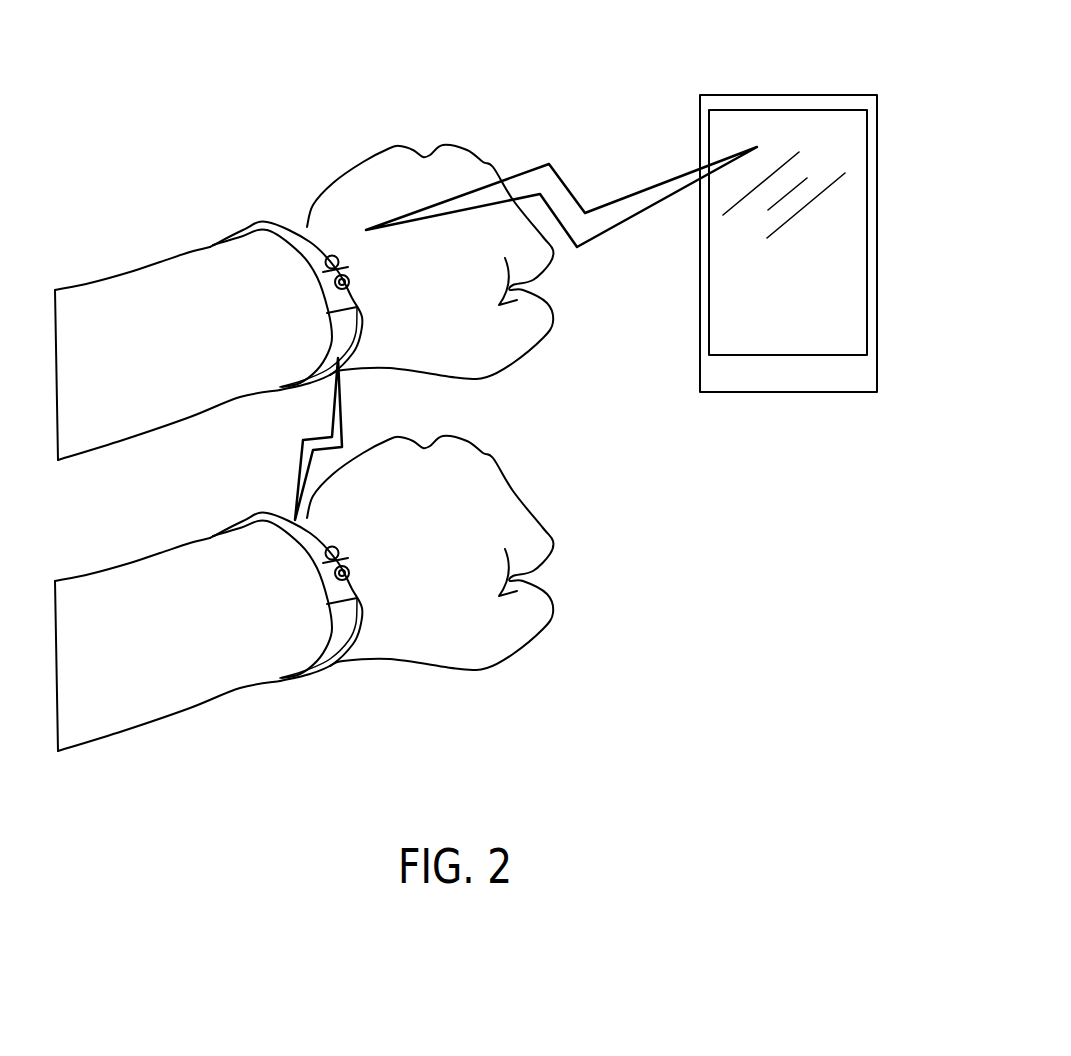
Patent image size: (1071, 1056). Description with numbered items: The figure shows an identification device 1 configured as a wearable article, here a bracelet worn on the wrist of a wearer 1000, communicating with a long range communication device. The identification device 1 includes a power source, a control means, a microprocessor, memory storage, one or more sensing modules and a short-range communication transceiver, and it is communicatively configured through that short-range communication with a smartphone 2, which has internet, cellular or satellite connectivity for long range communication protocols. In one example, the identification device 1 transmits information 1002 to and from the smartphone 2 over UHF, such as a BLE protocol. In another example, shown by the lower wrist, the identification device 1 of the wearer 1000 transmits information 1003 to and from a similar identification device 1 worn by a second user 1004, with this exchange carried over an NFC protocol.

The identification device 1 is at (242, 208).
The smartphone 2 is at (780, 66).
The wearer 1000 is at (400, 93).
The information 1002 is at (640, 173).
The information 1003 is at (349, 402).
The second user 1004 is at (521, 664).